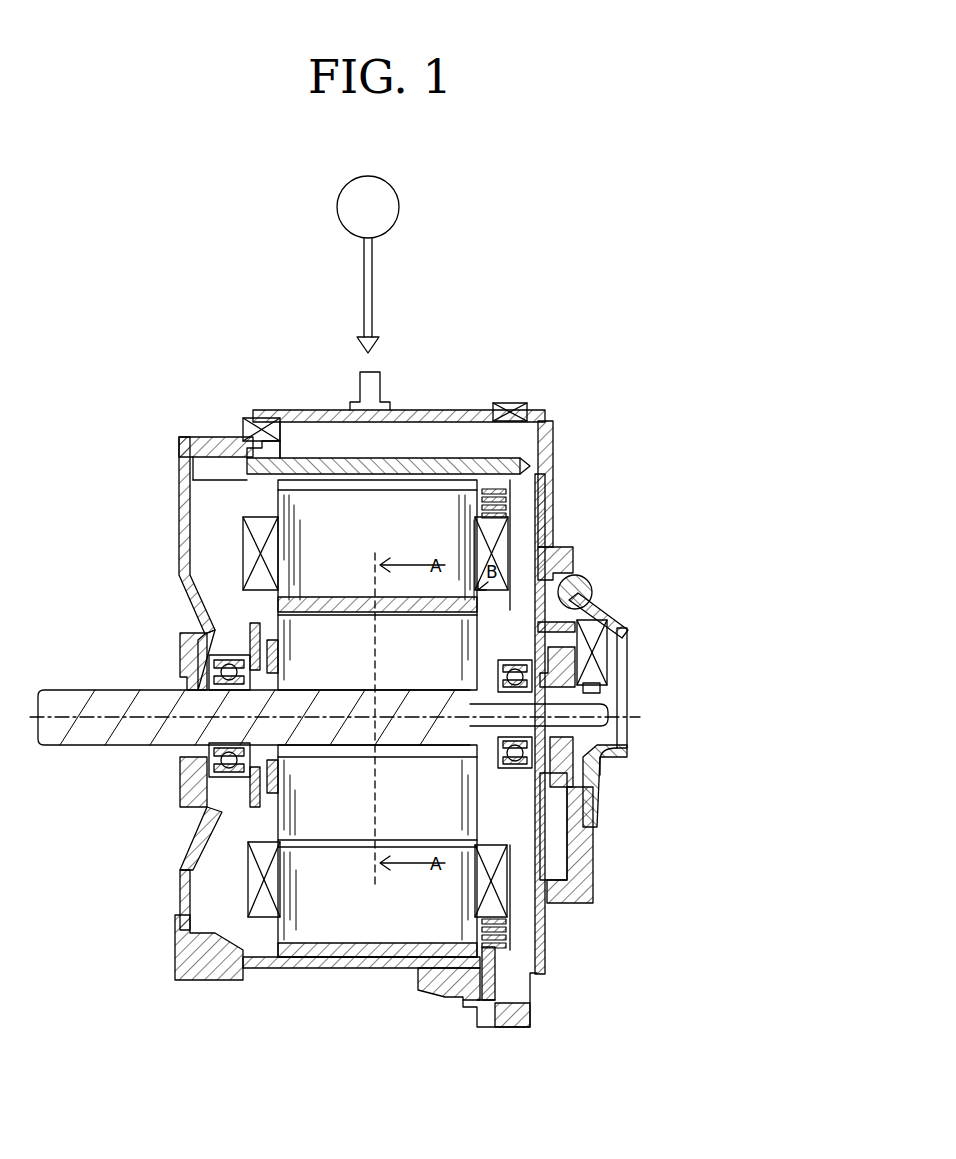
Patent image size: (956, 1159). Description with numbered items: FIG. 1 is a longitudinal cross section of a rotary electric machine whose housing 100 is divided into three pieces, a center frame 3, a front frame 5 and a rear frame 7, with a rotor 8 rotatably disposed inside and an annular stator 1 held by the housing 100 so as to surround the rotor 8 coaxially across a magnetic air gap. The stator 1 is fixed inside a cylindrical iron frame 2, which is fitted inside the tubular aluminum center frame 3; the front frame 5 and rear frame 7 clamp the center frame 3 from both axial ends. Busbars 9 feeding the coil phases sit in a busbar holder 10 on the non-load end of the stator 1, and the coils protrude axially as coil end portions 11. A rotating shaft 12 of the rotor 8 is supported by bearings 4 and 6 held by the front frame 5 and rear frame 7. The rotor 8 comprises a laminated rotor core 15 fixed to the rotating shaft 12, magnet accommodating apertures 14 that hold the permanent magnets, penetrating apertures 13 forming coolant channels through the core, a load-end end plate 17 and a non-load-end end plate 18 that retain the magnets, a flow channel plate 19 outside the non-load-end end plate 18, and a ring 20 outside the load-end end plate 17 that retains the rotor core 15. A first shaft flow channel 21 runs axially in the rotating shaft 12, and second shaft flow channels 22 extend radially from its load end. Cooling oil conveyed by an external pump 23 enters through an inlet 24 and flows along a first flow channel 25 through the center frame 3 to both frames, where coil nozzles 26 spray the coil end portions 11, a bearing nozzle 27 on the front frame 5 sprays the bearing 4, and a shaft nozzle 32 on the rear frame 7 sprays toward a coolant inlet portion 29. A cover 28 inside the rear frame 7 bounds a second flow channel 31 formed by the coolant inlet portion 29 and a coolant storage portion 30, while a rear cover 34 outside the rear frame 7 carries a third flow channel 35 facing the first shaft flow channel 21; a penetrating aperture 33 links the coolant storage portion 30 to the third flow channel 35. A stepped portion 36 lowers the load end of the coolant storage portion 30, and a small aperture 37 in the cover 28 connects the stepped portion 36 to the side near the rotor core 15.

The housing 100 is at (232, 410).
The stator 1 is at (432, 505).
The frame 2 is at (256, 416).
The center frame 3 is at (458, 410).
The bearing 4 is at (178, 633).
The front frame 5 is at (193, 663).
The bearing 6 is at (578, 790).
The rear frame 7 is at (543, 468).
The rotor 8 is at (100, 775).
The busbars 9 is at (510, 935).
The busbar holder 10 is at (540, 970).
The coil end portions 11 is at (243, 525).
The rotating shaft 12 is at (162, 712).
The penetrating apertures 13 is at (565, 573).
The magnet accommodating apertures 14 is at (495, 565).
The rotor core 15 is at (225, 818).
The load-end end plate 17 is at (272, 627).
The non-load-end end plate 18 is at (565, 820).
The flow channel plate 19 is at (560, 858).
The ring 20 is at (225, 600).
The first shaft flow channel 21 is at (607, 740).
The second shaft flow channels 22 is at (592, 693).
The external pump 23 is at (398, 213).
The inlet 24 is at (380, 402).
The first flow channel 25 is at (312, 452).
The coil nozzle 26 is at (193, 418).
The bearing nozzle 27 is at (180, 437).
The cover 28 is at (593, 594).
The coolant inlet portion 29 is at (545, 520).
The coolant storage portion 30 is at (545, 578).
The second flow channel 31 is at (640, 497).
The shaft nozzle 32 is at (542, 432).
The penetrating aperture 33 is at (608, 620).
The rear cover 34 is at (624, 732).
The third flow channel 35 is at (610, 673).
The stepped portion 36 is at (620, 630).
The small aperture 37 is at (612, 642).